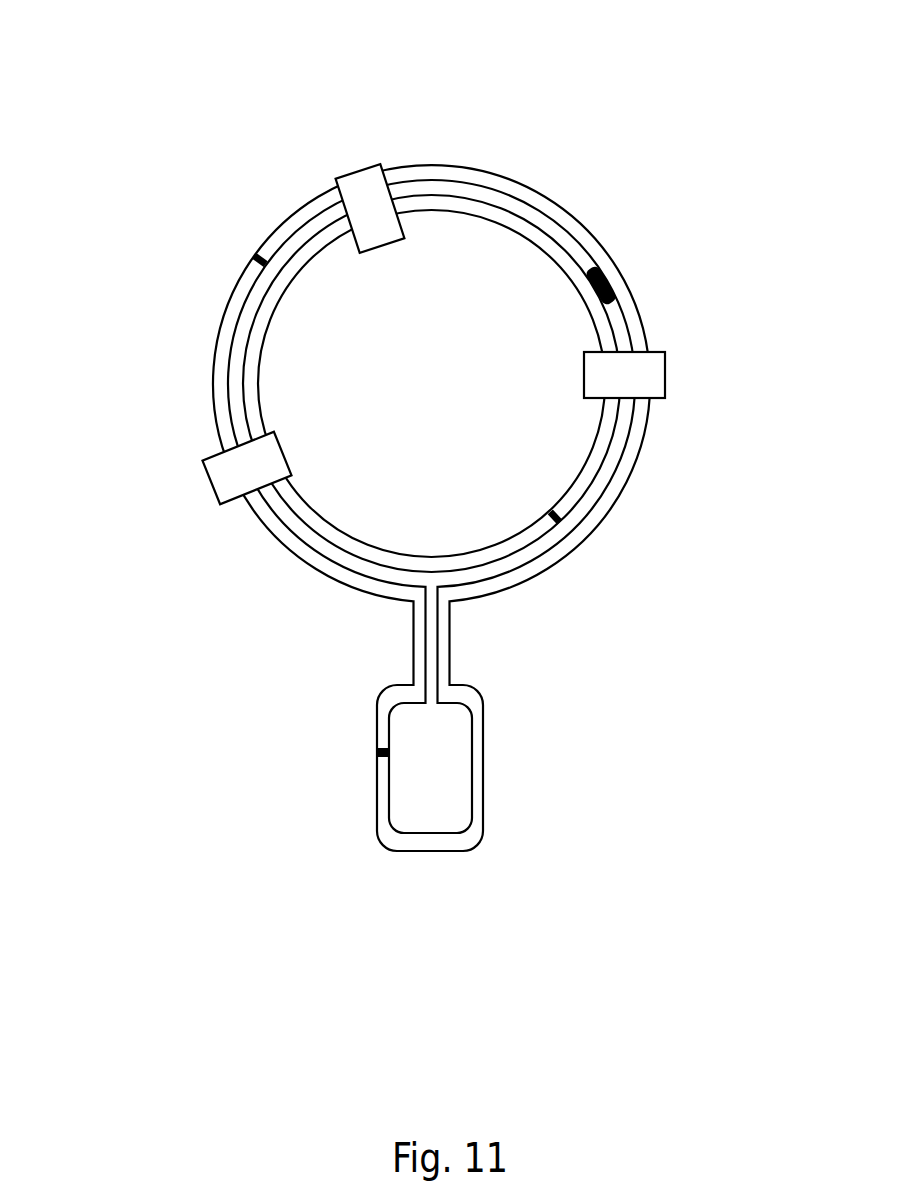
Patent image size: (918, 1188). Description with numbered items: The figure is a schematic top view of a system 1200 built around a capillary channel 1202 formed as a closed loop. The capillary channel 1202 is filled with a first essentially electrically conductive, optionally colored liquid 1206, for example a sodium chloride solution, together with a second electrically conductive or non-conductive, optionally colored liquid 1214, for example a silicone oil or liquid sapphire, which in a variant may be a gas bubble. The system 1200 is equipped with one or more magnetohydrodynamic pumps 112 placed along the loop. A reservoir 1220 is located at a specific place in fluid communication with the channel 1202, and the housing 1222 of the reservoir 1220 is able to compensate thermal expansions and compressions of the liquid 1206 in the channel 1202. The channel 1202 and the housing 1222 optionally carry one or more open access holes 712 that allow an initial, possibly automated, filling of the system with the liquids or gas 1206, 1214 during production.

The system 1200 is at (434, 452).
The magnetohydrodynamic pump 112 is at (362, 167).
The open access hole 712 is at (255, 260).
The capillary channel 1202 is at (522, 199).
The second liquid 1214 is at (611, 287).
The first liquid 1206 is at (608, 471).
The reservoir 1220 is at (472, 782).
The housing 1222 is at (483, 718).